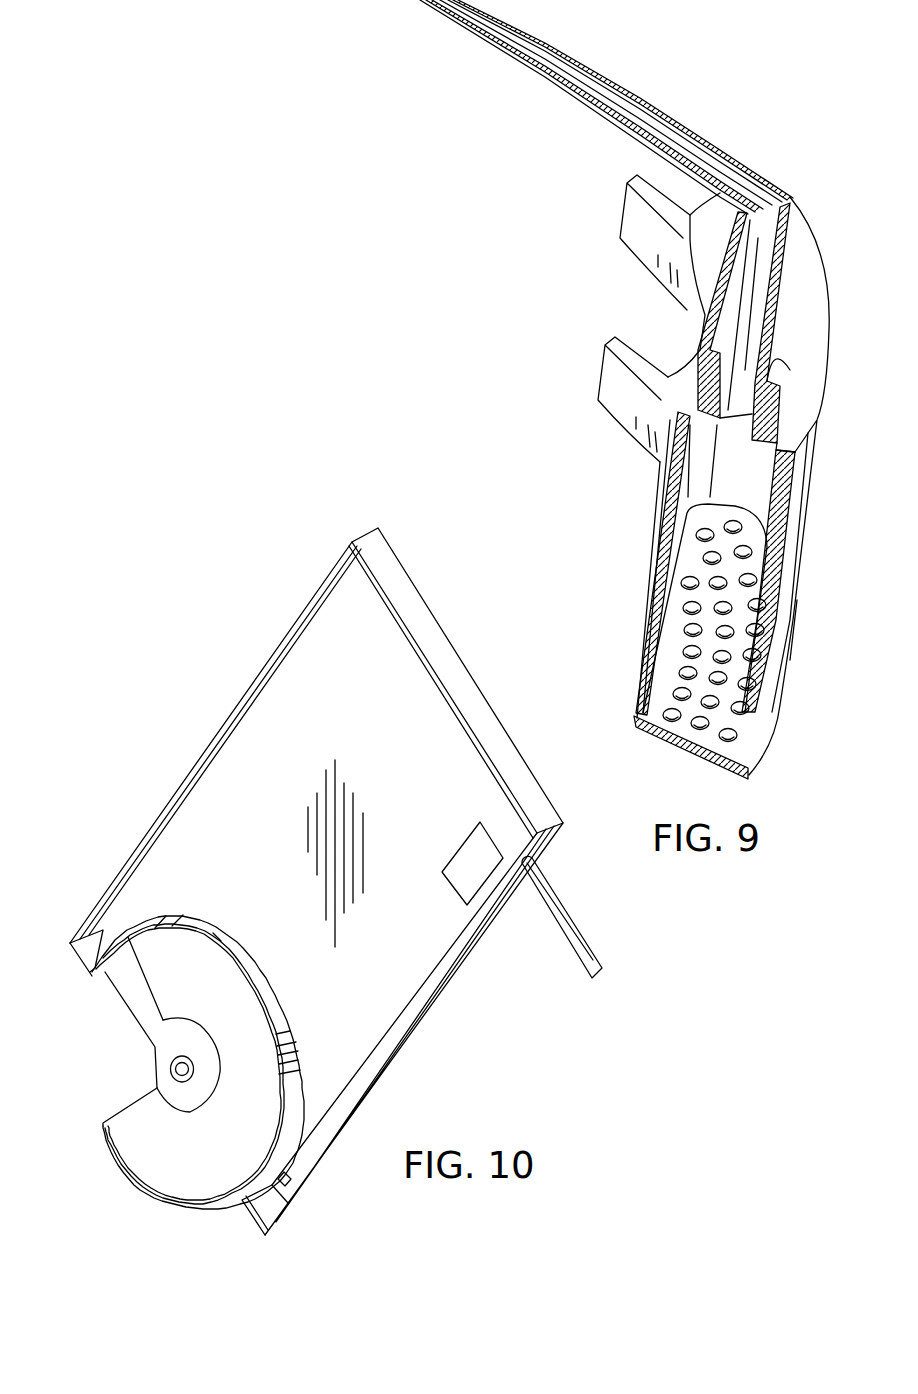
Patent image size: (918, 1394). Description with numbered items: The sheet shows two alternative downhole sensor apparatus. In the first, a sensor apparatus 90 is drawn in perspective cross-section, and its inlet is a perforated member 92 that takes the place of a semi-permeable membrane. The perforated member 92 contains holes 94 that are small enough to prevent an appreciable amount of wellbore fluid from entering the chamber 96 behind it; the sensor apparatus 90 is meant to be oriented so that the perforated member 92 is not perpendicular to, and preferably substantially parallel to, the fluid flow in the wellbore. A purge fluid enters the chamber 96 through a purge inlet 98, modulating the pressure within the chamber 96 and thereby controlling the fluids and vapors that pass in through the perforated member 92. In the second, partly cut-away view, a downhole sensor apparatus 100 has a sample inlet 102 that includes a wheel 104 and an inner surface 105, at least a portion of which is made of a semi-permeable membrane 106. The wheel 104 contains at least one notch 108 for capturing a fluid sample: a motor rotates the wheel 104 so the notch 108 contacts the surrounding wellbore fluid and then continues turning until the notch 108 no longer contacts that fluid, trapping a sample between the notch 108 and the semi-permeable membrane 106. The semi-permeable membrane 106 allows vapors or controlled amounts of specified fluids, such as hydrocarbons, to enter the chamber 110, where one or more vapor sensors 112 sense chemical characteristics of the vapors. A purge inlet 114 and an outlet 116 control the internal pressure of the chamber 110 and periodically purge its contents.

In FIG. 9, the sensor apparatus 90 is at (642, 396).
In FIG. 9, the perforated member 92 is at (711, 748).
In FIG. 9, the holes 94 is at (695, 730).
In FIG. 9, the chamber 96 is at (705, 617).
In FIG. 9, the purge inlet 98 is at (785, 372).
In FIG. 10, the downhole sensor apparatus 100 is at (328, 880).
In FIG. 10, the sample inlet 102 is at (93, 973).
In FIG. 10, the wheel 104 is at (212, 1055).
In FIG. 10, the inner surface 105 is at (170, 914).
In FIG. 10, the semi-permeable membrane 106 is at (214, 1037).
In FIG. 10, the notch 108 is at (88, 1079).
In FIG. 10, the chamber 110 is at (247, 748).
In FIG. 10, the vapor sensors 112 is at (493, 838).
In FIG. 10, the purge inlet 114 is at (568, 914).
In FIG. 10, the outlet 116 is at (294, 1186).